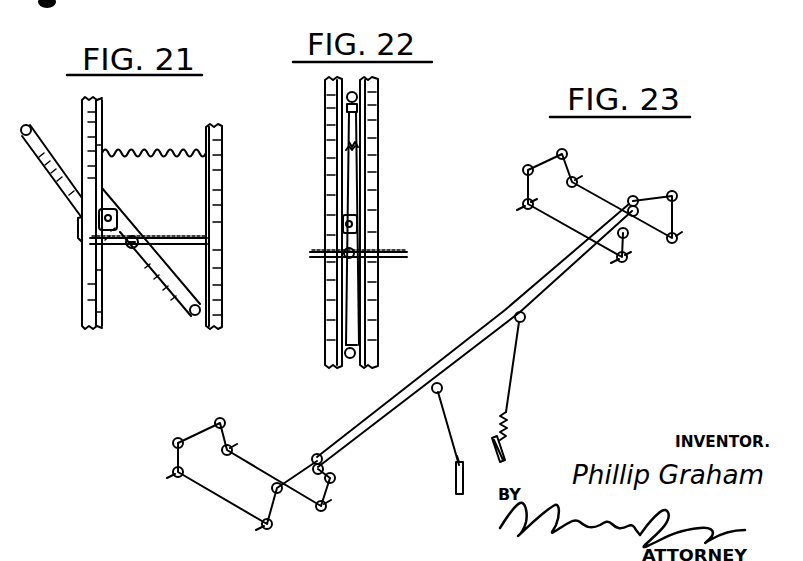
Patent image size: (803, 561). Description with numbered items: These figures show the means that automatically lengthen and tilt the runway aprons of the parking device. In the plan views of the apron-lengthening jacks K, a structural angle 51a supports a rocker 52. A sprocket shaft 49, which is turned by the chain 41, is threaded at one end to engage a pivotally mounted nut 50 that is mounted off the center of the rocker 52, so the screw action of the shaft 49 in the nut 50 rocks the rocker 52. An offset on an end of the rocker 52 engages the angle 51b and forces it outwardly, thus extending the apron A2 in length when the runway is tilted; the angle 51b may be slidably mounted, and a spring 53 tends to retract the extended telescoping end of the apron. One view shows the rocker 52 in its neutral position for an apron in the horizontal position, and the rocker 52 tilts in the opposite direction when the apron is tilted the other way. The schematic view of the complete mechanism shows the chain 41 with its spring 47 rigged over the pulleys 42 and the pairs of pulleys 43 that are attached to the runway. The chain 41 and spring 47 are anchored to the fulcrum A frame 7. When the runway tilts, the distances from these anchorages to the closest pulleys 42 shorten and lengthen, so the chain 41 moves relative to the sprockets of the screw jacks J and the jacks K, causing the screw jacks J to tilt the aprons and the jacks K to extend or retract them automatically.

In FIG. 21, the structural angle 51a is at (82, 108).
In FIG. 22, the angle 51b is at (327, 112).
In FIG. 21, the rocker 52 is at (106, 192).
In FIG. 22, the rocker 52 is at (353, 147).
In FIG. 21, the spring 53 is at (168, 149).
In FIG. 22, the spring 53 is at (358, 148).
In FIG. 21, the sprocket shaft 49 is at (178, 230).
In FIG. 22, the sprocket shaft 49 is at (408, 255).
In FIG. 21, the nut 50 is at (134, 249).
In FIG. 22, the nut 50 is at (360, 251).
In FIG. 21, the jacks K is at (62, 211).
In FIG. 23, the jacks K is at (586, 169).
In FIG. 21, the tiltable apron A2 is at (121, 231).
In FIG. 23, the pulleys 42 is at (528, 165).
In FIG. 23, the pairs of pulleys 43 is at (634, 196).
In FIG. 23, the chain 41 is at (489, 322).
In FIG. 23, the spring 47 is at (503, 415).
In FIG. 23, the fulcrum A frames 7 is at (456, 485).
In FIG. 23, the screw jacks J is at (525, 214).